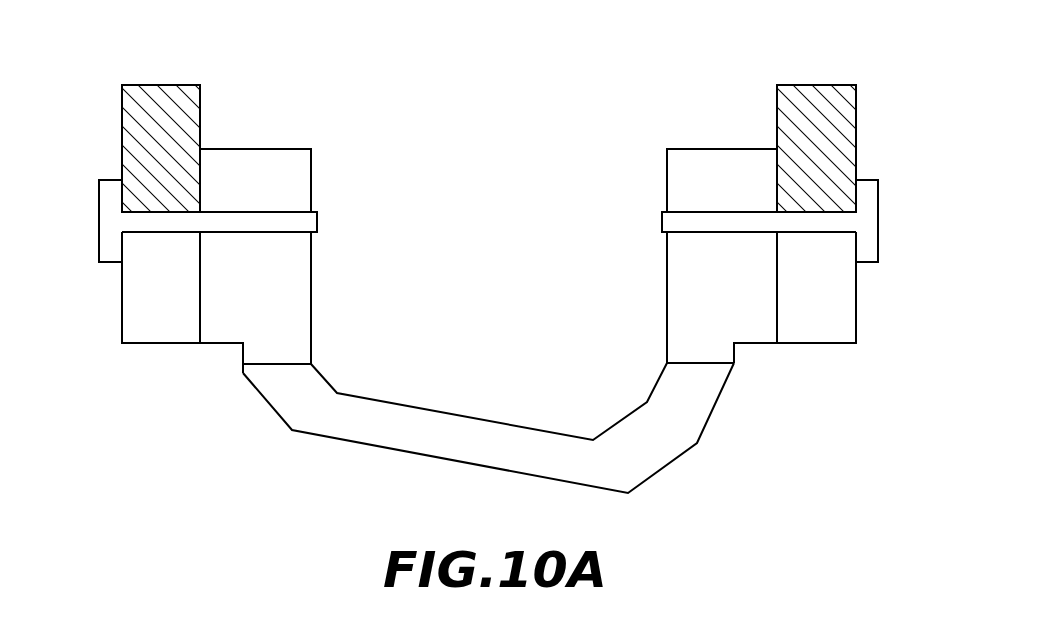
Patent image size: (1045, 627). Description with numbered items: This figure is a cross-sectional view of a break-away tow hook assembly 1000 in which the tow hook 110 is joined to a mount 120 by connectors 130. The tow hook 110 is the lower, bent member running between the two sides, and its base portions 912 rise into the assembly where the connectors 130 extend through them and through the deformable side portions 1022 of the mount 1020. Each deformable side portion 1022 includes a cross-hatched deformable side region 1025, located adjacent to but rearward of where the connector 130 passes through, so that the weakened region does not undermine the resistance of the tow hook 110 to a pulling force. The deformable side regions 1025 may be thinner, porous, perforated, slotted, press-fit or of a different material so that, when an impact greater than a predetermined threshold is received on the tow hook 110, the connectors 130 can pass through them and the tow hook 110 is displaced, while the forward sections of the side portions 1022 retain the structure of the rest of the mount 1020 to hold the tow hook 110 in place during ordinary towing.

The break-away tow hook assembly 1000 is at (144, 44).
The deformable side regions 1025 is at (151, 134).
The connector 130 is at (107, 213).
The deformable side portions 1022 is at (150, 307).
The mount 1020 is at (151, 355).
The deformable base portions 912 is at (659, 172).
The mount 120 is at (826, 355).
The tow hook 110 is at (343, 433).